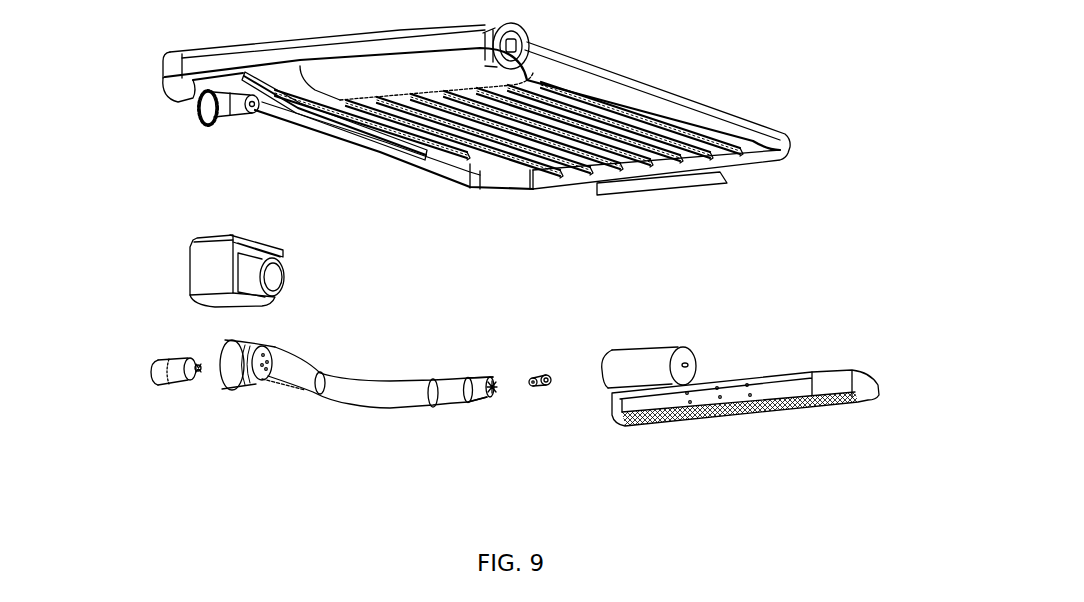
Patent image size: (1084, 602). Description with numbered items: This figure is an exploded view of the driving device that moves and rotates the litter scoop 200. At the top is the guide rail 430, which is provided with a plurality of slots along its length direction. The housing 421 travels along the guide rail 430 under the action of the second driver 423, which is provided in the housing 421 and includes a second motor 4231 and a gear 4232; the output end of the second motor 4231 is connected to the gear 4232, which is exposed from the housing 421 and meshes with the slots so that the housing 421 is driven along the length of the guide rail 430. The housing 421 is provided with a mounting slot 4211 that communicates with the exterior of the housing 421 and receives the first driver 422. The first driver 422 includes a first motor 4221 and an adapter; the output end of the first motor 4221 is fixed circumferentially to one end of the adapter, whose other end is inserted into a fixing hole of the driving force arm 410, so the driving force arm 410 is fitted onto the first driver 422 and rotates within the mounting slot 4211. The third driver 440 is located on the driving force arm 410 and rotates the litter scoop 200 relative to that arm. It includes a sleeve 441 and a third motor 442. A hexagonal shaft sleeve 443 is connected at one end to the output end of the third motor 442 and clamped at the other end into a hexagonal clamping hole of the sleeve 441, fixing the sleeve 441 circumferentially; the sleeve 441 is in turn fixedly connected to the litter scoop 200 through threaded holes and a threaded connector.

The litter scoop 200 is at (880, 398).
The driving force arm 410 is at (353, 410).
The mounting slot 4211 is at (252, 393).
The housing 421 is at (204, 275).
The first driver 422 is at (121, 378).
The first motor 4221 is at (151, 370).
The second driver 423 is at (155, 137).
The second motor 4231 is at (222, 120).
The gear 4232 is at (203, 113).
The guide rail 430 is at (333, 125).
The third driver 440 is at (714, 434).
The sleeve 441 is at (781, 410).
The third motor 442 is at (483, 404).
The hexagonal shaft sleeve 443 is at (540, 387).